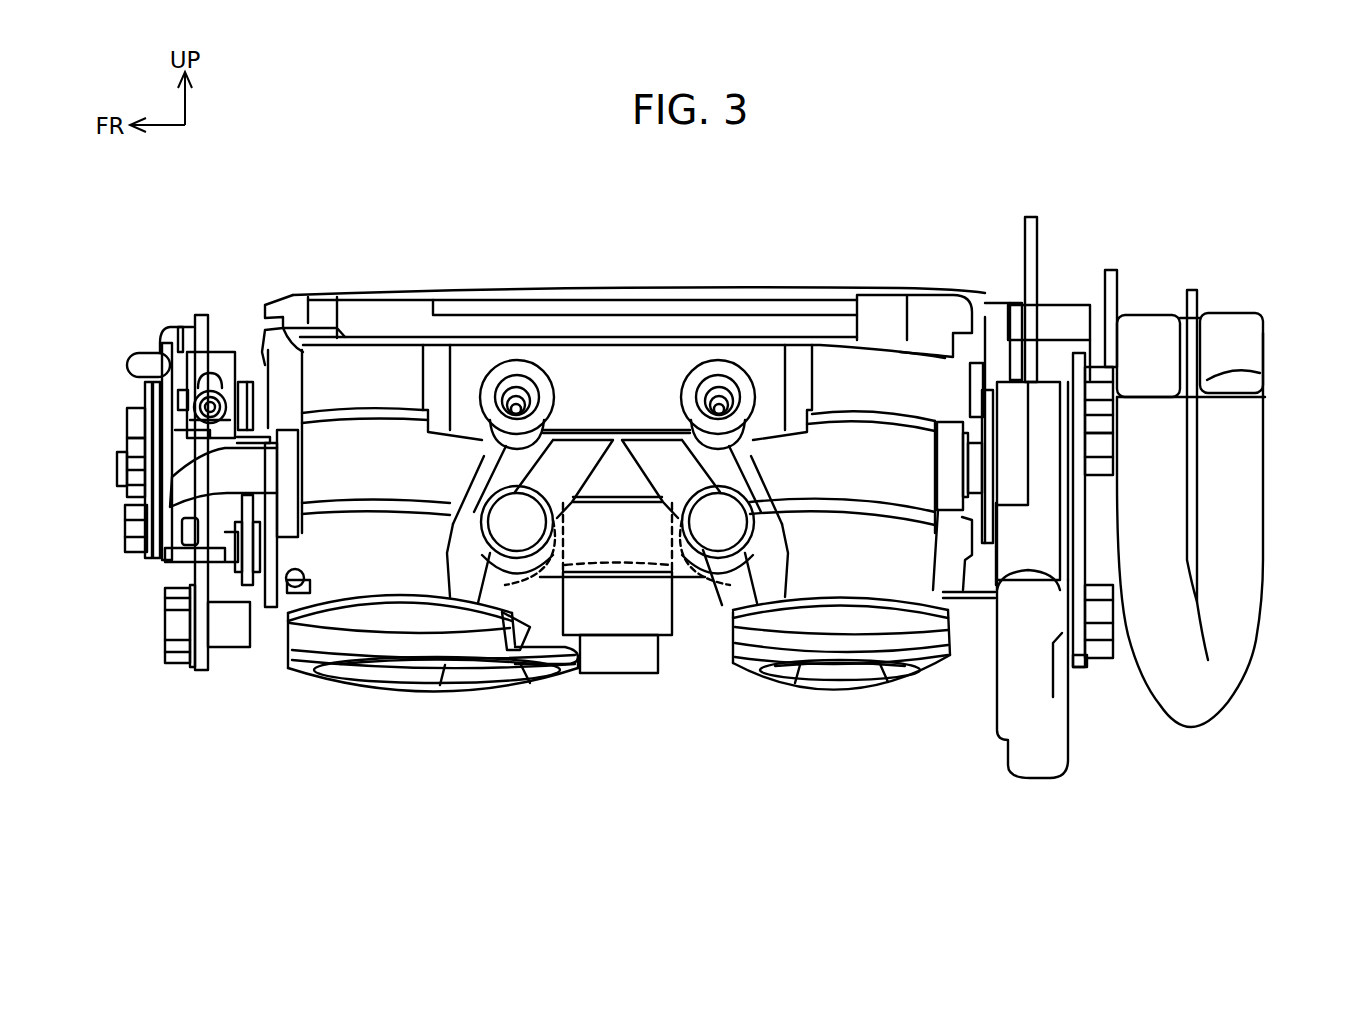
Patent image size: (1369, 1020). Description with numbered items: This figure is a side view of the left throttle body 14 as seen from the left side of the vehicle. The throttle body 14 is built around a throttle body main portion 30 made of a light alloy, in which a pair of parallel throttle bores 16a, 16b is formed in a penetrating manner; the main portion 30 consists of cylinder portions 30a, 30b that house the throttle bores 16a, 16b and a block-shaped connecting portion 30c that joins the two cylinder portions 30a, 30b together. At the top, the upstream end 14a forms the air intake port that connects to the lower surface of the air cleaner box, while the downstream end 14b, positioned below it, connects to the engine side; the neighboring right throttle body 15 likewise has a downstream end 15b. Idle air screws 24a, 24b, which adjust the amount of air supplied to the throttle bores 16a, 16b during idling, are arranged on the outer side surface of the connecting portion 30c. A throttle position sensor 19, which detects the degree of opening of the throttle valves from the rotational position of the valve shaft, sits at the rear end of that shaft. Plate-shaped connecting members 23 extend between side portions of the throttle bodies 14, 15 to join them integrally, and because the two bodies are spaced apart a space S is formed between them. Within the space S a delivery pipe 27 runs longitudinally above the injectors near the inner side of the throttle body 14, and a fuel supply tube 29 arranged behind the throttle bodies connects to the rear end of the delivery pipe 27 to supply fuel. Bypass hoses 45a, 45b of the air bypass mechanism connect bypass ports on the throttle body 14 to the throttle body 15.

The throttle body 14 is at (438, 274).
The upstream end 14a is at (556, 296).
The downstream end 14b is at (375, 695).
The throttle body 15 is at (568, 697).
The downstream end 15b is at (503, 695).
The throttle bore 16a is at (418, 680).
The throttle bore 16b is at (865, 677).
The throttle position sensor 19 is at (1050, 507).
The connecting member 23 is at (195, 572).
The idle air screw 24a is at (513, 382).
The idle air screw 24b is at (718, 382).
The delivery pipe 27 is at (1070, 298).
The fuel supply tube 29 is at (1235, 678).
The throttle body main portion 30 is at (770, 281).
The cylinder portion 30a is at (348, 578).
The cylinder portion 30b is at (883, 568).
The connecting portion 30c is at (631, 376).
The bypass hose 45a is at (543, 612).
The bypass hose 45b is at (722, 618).
The space S is at (698, 656).